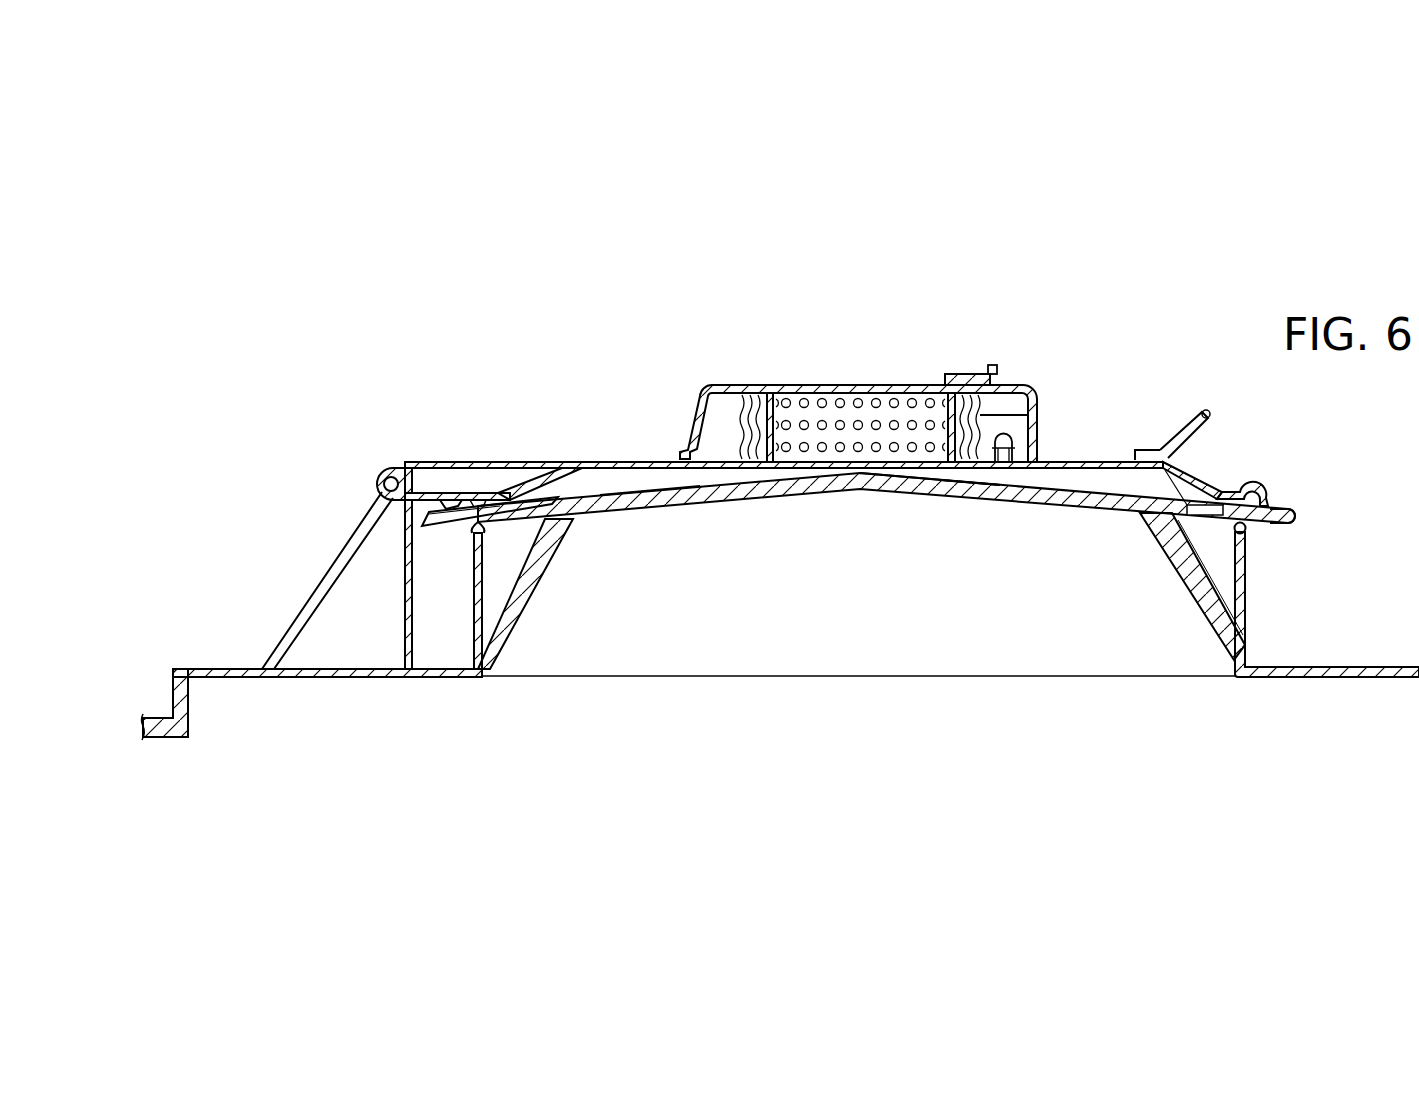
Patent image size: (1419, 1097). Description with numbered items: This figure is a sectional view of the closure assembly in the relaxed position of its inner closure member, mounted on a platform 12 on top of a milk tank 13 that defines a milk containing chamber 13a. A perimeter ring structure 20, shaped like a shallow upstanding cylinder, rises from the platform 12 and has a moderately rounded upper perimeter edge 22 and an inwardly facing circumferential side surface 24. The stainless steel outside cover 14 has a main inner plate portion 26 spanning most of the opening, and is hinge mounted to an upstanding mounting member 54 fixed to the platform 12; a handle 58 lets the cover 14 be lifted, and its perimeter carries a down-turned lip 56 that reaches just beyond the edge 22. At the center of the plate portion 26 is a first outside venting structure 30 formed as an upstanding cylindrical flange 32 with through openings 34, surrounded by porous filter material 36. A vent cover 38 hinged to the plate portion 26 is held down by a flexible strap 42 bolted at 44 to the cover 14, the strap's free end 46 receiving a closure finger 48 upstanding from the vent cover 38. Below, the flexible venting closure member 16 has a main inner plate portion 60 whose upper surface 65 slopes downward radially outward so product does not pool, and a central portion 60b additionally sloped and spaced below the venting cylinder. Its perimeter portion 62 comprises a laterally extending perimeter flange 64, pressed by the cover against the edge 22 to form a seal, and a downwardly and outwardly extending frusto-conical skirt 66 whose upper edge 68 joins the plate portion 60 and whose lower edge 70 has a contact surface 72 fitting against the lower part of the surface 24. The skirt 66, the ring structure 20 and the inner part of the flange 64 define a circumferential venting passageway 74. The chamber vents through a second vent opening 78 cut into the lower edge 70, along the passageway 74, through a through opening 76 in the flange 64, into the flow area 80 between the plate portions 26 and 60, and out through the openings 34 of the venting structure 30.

The platform 12 is at (243, 670).
The milk tank 13 is at (180, 703).
The milk containing chamber 13a is at (228, 697).
The outside cover 14 is at (1092, 460).
The venting closure member 16 is at (803, 498).
The perimeter ring structure 20 is at (473, 598).
The upper perimeter edge 22 is at (1246, 530).
The inwardly facing circumferential side surface 24 is at (1238, 580).
The main inner plate portion 26 is at (620, 460).
The first outside venting structure 30 is at (878, 416).
The upstanding cylindrical flange 32 is at (740, 418).
The through openings 34 is at (843, 400).
The porous filter material 36 is at (750, 437).
The vent cover 38 is at (790, 385).
The flexible strap 42 is at (1038, 412).
The bolt 44 is at (1018, 440).
The free end 46 is at (953, 376).
The closure finger 48 is at (995, 367).
The upstanding mounting member 54 is at (300, 613).
The down-turned lip 56 is at (445, 503).
The handle 58 is at (1212, 413).
The main inner plate portion 60 is at (786, 498).
The central portion 60b is at (960, 495).
The perimeter portion 62 is at (513, 619).
The perimeter flange 64 is at (423, 516).
The upper surface 65 is at (641, 495).
The skirt 66 is at (478, 503).
The upper edge of skirt 68 is at (1140, 520).
The lower edge of skirt 70 is at (1232, 660).
The contact surface 72 is at (1243, 640).
The circumferential venting passageway 74 is at (1245, 548).
The through opening 76 is at (1203, 510).
The second vent opening 78 is at (548, 562).
The flow area 80 is at (1158, 480).